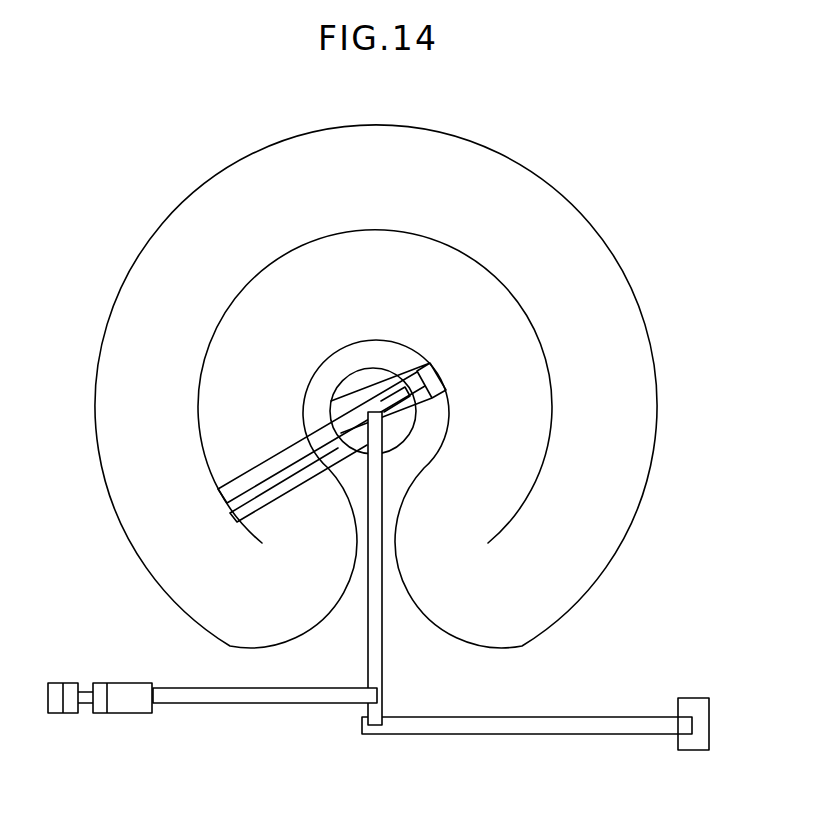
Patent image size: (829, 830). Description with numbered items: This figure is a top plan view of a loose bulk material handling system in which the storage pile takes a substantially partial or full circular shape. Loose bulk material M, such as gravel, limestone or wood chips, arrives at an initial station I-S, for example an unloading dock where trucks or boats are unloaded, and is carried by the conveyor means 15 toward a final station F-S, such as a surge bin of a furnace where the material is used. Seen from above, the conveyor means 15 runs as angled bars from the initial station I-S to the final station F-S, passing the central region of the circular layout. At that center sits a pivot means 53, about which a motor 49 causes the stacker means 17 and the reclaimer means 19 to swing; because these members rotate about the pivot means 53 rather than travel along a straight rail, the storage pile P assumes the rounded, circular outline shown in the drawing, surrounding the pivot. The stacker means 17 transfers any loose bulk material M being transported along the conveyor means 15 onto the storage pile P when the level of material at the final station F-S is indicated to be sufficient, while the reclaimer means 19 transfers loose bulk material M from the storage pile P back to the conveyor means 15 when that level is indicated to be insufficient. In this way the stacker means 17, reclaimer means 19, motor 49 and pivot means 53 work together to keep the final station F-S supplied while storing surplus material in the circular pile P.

The conveyor means 15 is at (382, 647).
The stacker means 17 is at (263, 472).
The reclaimer means 19 is at (275, 493).
The motor 49 is at (435, 380).
The pivot means 53 is at (382, 374).
The storage pile P is at (628, 350).
The loose bulk material M is at (643, 443).
The initial station I-S is at (140, 739).
The final station F-S is at (709, 769).